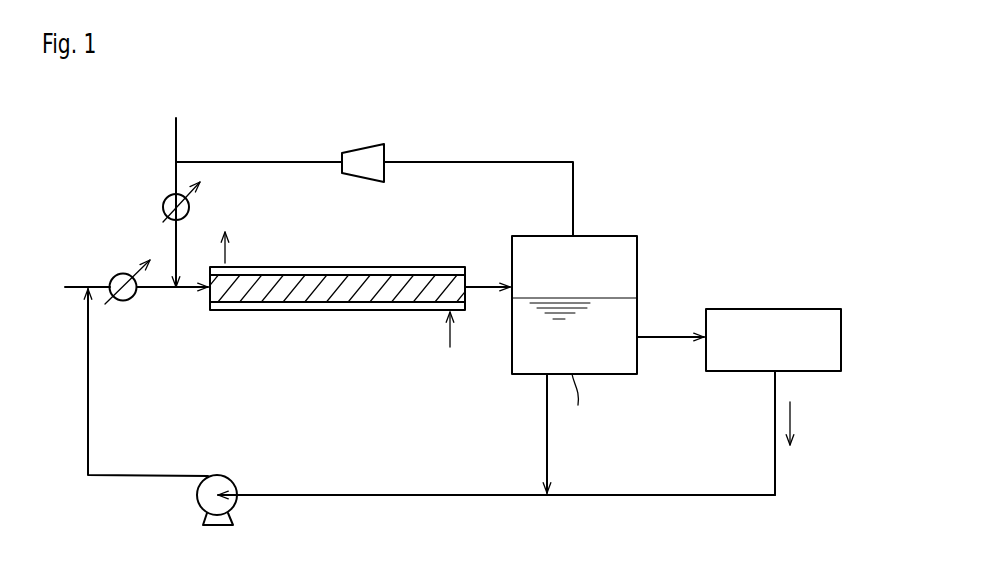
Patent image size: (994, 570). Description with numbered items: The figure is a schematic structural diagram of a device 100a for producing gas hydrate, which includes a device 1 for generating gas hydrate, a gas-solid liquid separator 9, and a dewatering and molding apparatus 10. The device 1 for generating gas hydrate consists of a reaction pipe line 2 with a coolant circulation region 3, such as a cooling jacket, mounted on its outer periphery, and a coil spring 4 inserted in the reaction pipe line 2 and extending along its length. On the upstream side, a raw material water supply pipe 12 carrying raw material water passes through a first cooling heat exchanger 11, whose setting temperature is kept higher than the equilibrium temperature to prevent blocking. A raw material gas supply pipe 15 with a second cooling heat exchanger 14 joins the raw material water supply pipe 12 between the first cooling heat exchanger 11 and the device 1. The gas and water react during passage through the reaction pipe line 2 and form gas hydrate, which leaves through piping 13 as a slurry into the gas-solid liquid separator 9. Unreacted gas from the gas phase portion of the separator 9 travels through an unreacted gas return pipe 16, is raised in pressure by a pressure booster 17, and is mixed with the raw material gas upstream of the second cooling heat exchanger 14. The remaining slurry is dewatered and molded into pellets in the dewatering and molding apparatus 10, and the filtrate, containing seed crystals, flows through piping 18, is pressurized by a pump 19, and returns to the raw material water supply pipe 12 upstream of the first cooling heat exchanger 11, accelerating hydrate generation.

The device for producing gas hydrate 100a is at (503, 142).
The device for generating gas hydrate 1 is at (337, 288).
The reaction pipe line 2 is at (254, 302).
The coolant circulation region 3 is at (420, 267).
The coil spring 4 is at (332, 292).
The gas-solid liquid separator 9 is at (616, 236).
The dewatering and molding apparatus 10 is at (743, 309).
The first cooling heat exchanger 11 is at (130, 300).
The raw material water supply pipe 12 is at (78, 283).
The piping 13 is at (493, 285).
The second cooling heat exchanger 14 is at (162, 220).
The raw material gas supply pipe 15 is at (178, 133).
The unreacted gas return pipe 16 is at (436, 162).
The pressure booster 17 is at (362, 145).
The piping 18 is at (650, 495).
The pump 19 is at (228, 478).